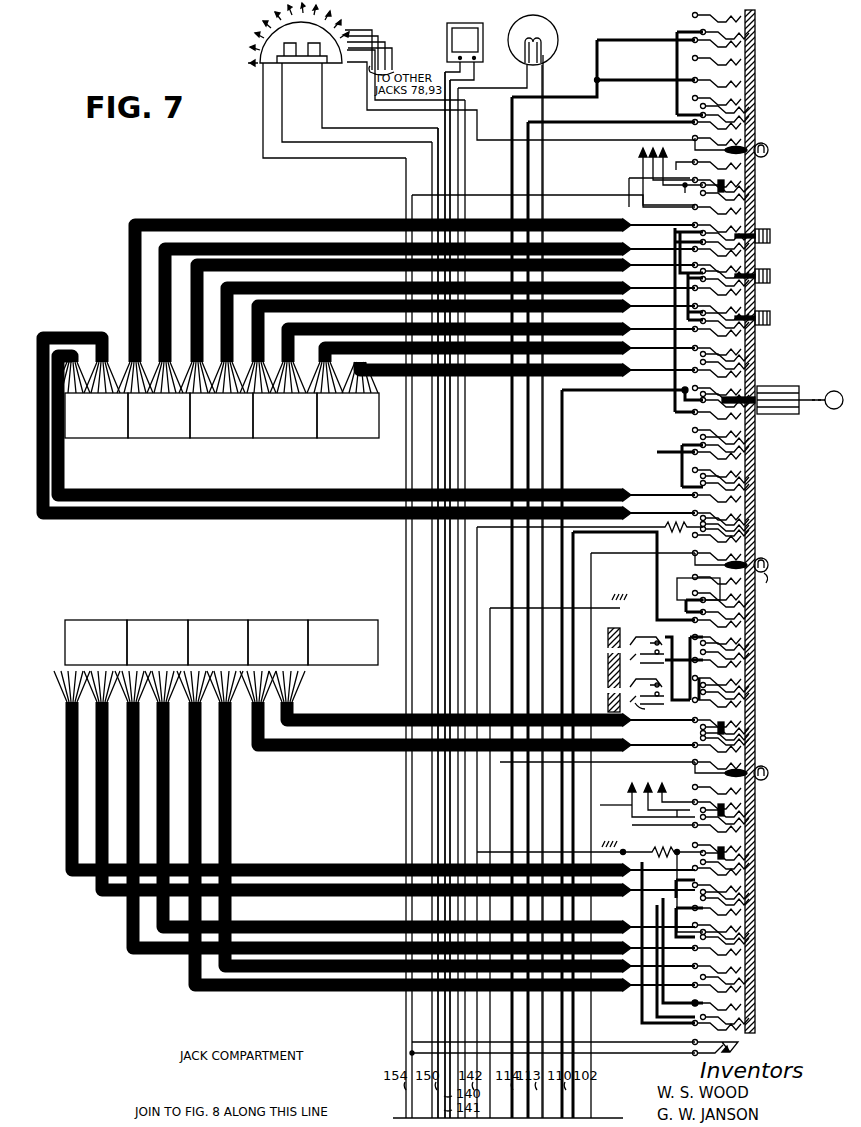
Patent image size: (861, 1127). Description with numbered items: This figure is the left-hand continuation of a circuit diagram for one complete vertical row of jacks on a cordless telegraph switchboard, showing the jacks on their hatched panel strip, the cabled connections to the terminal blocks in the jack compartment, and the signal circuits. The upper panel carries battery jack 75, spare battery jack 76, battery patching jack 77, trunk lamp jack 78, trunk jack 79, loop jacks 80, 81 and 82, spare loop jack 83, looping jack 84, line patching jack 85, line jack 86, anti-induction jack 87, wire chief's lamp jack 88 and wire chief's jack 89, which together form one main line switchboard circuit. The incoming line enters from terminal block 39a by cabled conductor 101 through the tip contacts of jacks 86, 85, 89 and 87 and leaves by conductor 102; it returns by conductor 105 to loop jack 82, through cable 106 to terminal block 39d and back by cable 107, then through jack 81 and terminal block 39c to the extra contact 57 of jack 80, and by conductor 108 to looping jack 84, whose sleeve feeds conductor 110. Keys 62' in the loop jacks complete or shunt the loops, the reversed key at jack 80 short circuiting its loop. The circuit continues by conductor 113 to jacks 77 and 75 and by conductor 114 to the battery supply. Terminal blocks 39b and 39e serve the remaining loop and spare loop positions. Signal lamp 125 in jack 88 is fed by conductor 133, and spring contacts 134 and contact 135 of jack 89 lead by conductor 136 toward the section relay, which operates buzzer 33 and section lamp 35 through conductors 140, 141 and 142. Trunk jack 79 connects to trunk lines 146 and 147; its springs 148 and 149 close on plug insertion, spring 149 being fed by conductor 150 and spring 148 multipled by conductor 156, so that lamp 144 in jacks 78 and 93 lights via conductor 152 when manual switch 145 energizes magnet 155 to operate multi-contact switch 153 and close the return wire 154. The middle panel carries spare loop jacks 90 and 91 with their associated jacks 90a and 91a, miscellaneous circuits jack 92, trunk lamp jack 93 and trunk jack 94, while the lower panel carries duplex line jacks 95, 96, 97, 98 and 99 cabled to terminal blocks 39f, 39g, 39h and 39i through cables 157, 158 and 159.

The section buzzer 33 is at (447, 34).
The section lamp 35 is at (545, 34).
The terminal block 39a is at (104, 440).
The terminal block 39b is at (166, 440).
The terminal block 39c is at (226, 440).
The terminal block 39d is at (286, 440).
The terminal block 39e is at (349, 440).
The terminal block 39f is at (98, 618).
The terminal block 39g is at (160, 618).
The terminal block 39h is at (222, 618).
The terminal block 39i is at (286, 618).
The extra contact 57 is at (704, 230).
The key 62' is at (760, 226).
The battery jack 75 is at (753, 29).
The spare battery jack 76 is at (764, 72).
The battery patching jack 77 is at (767, 113).
The trunk lamp jack 78 is at (735, 157).
The trunk jack 79 is at (759, 196).
The loop jack 80 is at (765, 240).
The loop jack 81 is at (765, 279).
The loop jack 82 is at (763, 320).
The spare loop jack 83 is at (758, 361).
The looping jack 84 is at (768, 401).
The line patching jack 85 is at (769, 444).
The line jack 86 is at (752, 485).
The anti-induction jack 87 is at (665, 524).
The wire chief's lamp jack 88 is at (762, 564).
The wire chief's jack 89 is at (757, 609).
The spare loop jack 90 is at (727, 651).
The spare loop jack 90a is at (624, 640).
The spare loop jack 91 is at (727, 683).
The spare loop jack 91a is at (652, 711).
The miscellaneous circuits jack 92 is at (767, 735).
The trunk lamp jack 93 is at (639, 773).
The trunk jack 94 is at (729, 816).
The line jack 95 is at (644, 858).
The anti-induction jack 96 is at (747, 942).
The set jack 97 is at (742, 903).
The spare set jack 98 is at (758, 980).
The wire chief jack 99 is at (756, 1016).
The cabled conductor 101 is at (245, 491).
The conductor 102 is at (570, 543).
The conductor 105 is at (563, 405).
The cable 106 is at (326, 338).
The cable 107 is at (260, 338).
The conductor 108 is at (675, 402).
The conductor 110 is at (627, 392).
The conductor 113 is at (619, 121).
The conductor 114 is at (597, 71).
The signal lamp 125 is at (774, 585).
The conductor 133 is at (613, 554).
The spring contacts 134 is at (712, 595).
The contact 135 is at (714, 598).
The conductor 136 is at (602, 606).
The conductor 140 is at (445, 72).
The conductor 141 is at (440, 116).
The conductor 142 is at (473, 82).
The signal lamp 144 is at (761, 150).
The manual switch 145 is at (732, 1048).
The trunk line 146 is at (640, 162).
The trunk line 147 is at (638, 180).
The contact spring 148 is at (700, 185).
The contact spring 149 is at (720, 184).
The conductor 150 is at (770, 197).
The conductor 152 is at (543, 145).
The multi-contact switch 153 is at (252, 46).
The common return wire 154 is at (263, 128).
The magnet 155 is at (300, 60).
The conductor 156 is at (672, 168).
The cable 157 is at (66, 828).
The cable 158 is at (126, 920).
The cable 159 is at (284, 928).